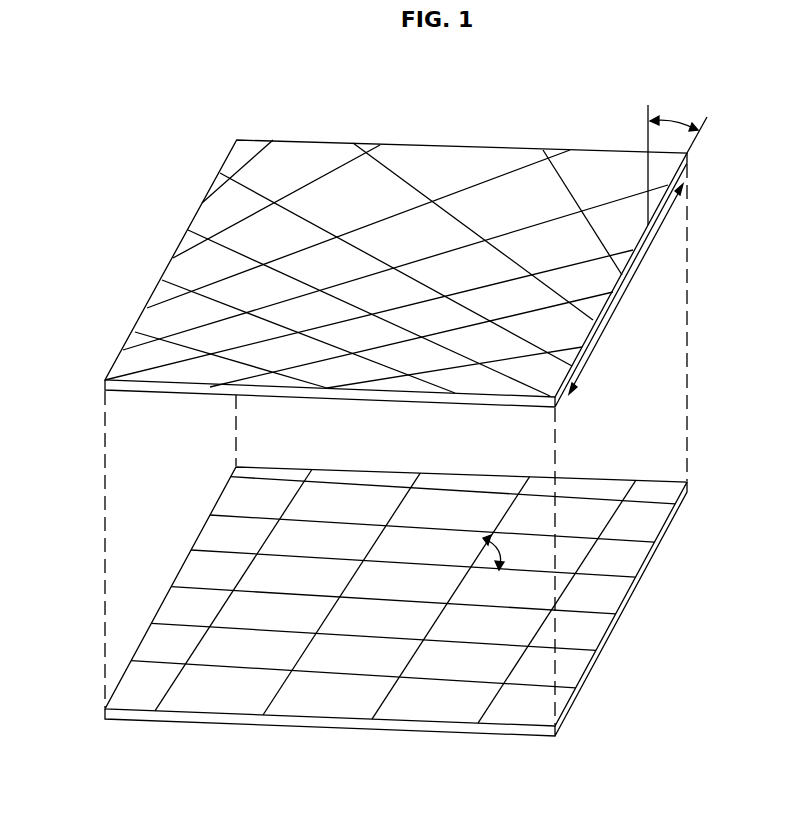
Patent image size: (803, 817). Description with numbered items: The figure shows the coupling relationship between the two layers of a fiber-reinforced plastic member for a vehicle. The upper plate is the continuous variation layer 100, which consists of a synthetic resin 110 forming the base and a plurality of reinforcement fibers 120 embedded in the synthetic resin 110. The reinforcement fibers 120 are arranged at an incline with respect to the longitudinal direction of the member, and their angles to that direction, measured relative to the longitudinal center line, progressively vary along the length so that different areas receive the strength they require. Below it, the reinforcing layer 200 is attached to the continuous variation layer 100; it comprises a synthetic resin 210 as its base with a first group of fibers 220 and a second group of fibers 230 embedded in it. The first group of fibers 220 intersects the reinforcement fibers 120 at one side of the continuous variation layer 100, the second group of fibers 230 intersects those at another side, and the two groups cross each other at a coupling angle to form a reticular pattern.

The continuous variation layer 100 is at (389, 234).
The synthetic resin 110 is at (478, 84).
The reinforcement fibers 120 is at (107, 199).
The reinforcing layer 200 is at (411, 601).
The synthetic resin 210 is at (651, 637).
The first group of fibers 220 is at (150, 486).
The second group of fibers 230 is at (627, 540).